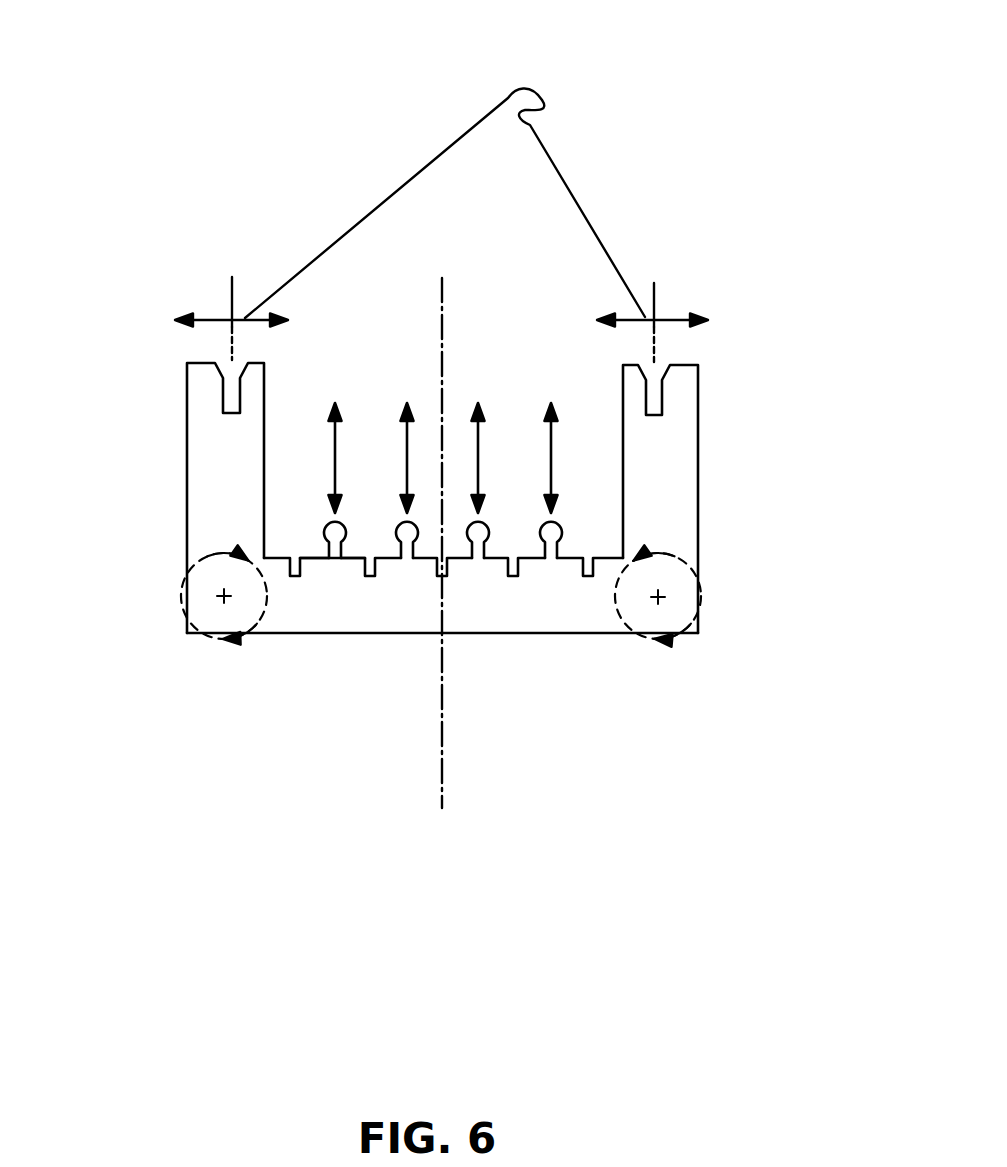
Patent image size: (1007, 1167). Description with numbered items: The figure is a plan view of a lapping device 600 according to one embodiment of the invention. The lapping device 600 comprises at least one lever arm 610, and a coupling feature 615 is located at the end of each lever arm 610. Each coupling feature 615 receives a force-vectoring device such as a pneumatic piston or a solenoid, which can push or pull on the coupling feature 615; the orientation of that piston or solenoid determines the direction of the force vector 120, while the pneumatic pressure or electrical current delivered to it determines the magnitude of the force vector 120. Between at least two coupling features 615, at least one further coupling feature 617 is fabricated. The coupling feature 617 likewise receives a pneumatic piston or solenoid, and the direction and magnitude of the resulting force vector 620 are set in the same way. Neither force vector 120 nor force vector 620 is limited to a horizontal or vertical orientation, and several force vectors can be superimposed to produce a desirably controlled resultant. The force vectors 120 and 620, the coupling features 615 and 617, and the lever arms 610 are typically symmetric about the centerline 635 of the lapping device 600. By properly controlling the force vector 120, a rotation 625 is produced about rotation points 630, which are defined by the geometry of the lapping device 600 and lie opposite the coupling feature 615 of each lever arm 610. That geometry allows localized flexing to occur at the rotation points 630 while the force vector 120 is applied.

The lapping device 600 is at (459, 437).
The force vector 120 is at (565, 108).
The lever arm 610 is at (207, 440).
The coupling feature 615 is at (217, 400).
The coupling feature 617 is at (330, 568).
The force vector 620 is at (337, 455).
The rotation 625 is at (207, 555).
The rotation points 630 is at (655, 600).
The centerline 635 is at (443, 747).